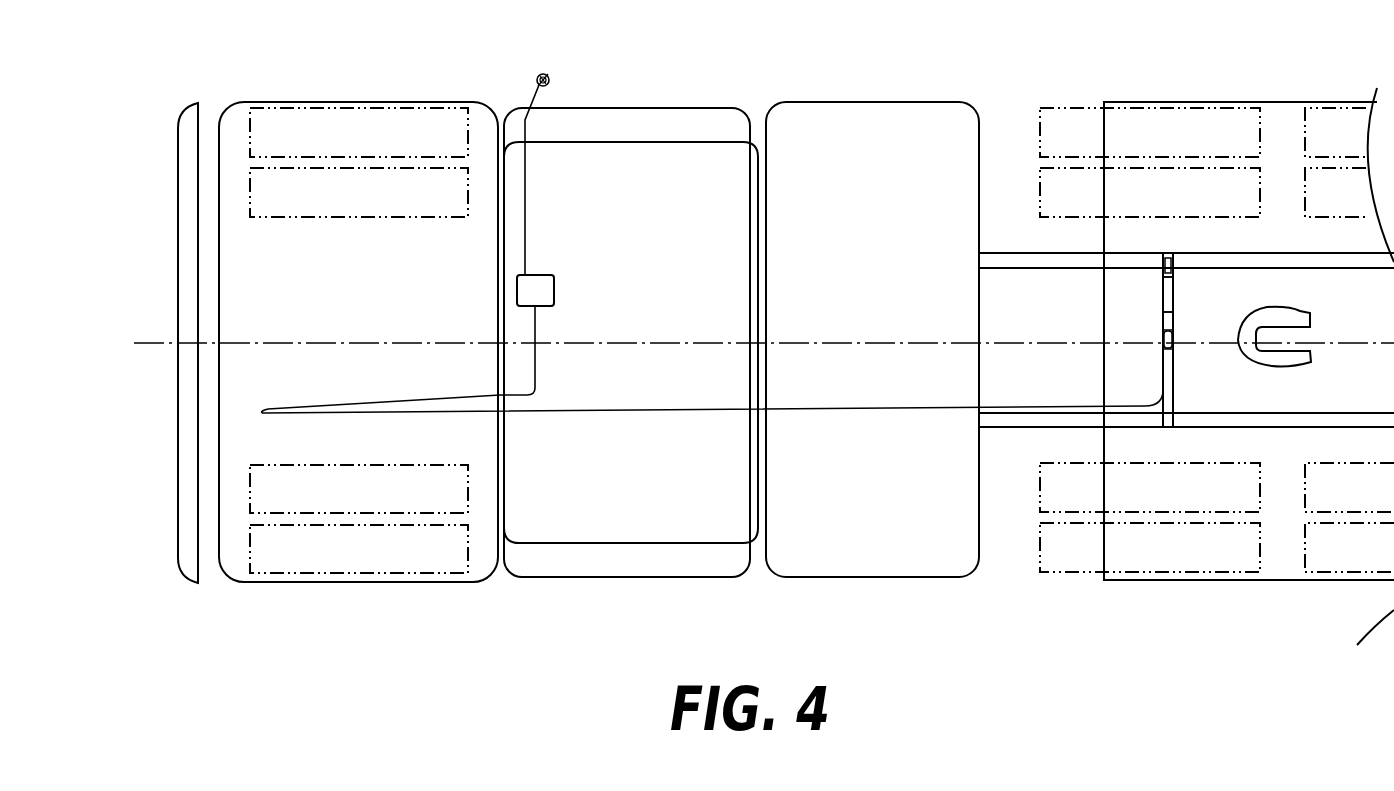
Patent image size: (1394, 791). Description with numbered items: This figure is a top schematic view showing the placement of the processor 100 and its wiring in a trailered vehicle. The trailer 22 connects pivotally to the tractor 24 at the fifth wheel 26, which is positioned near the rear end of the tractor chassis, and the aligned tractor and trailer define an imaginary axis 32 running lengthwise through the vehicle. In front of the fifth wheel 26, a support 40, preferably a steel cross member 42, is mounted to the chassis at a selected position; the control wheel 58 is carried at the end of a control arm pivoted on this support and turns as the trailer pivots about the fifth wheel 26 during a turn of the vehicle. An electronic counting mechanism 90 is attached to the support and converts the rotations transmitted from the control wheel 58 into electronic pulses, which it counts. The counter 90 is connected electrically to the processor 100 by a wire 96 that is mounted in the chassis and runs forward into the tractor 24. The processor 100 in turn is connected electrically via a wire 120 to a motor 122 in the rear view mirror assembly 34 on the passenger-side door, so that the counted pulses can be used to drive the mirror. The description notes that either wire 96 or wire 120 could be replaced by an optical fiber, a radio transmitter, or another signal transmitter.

The trailer 22 is at (1253, 418).
The tractor 24 is at (660, 512).
The fifth wheel 26 is at (1270, 358).
The imaginary axis 32 is at (137, 343).
The rear view mirror 34 is at (558, 71).
The support 40 is at (1160, 308).
The cross member 42 is at (1162, 257).
The control wheel 58 is at (1175, 350).
The electronic counting mechanism 90 is at (1178, 268).
The wire 96 is at (477, 400).
The processor 100 is at (556, 293).
The wire 120 is at (524, 238).
The motor 122 is at (537, 77).